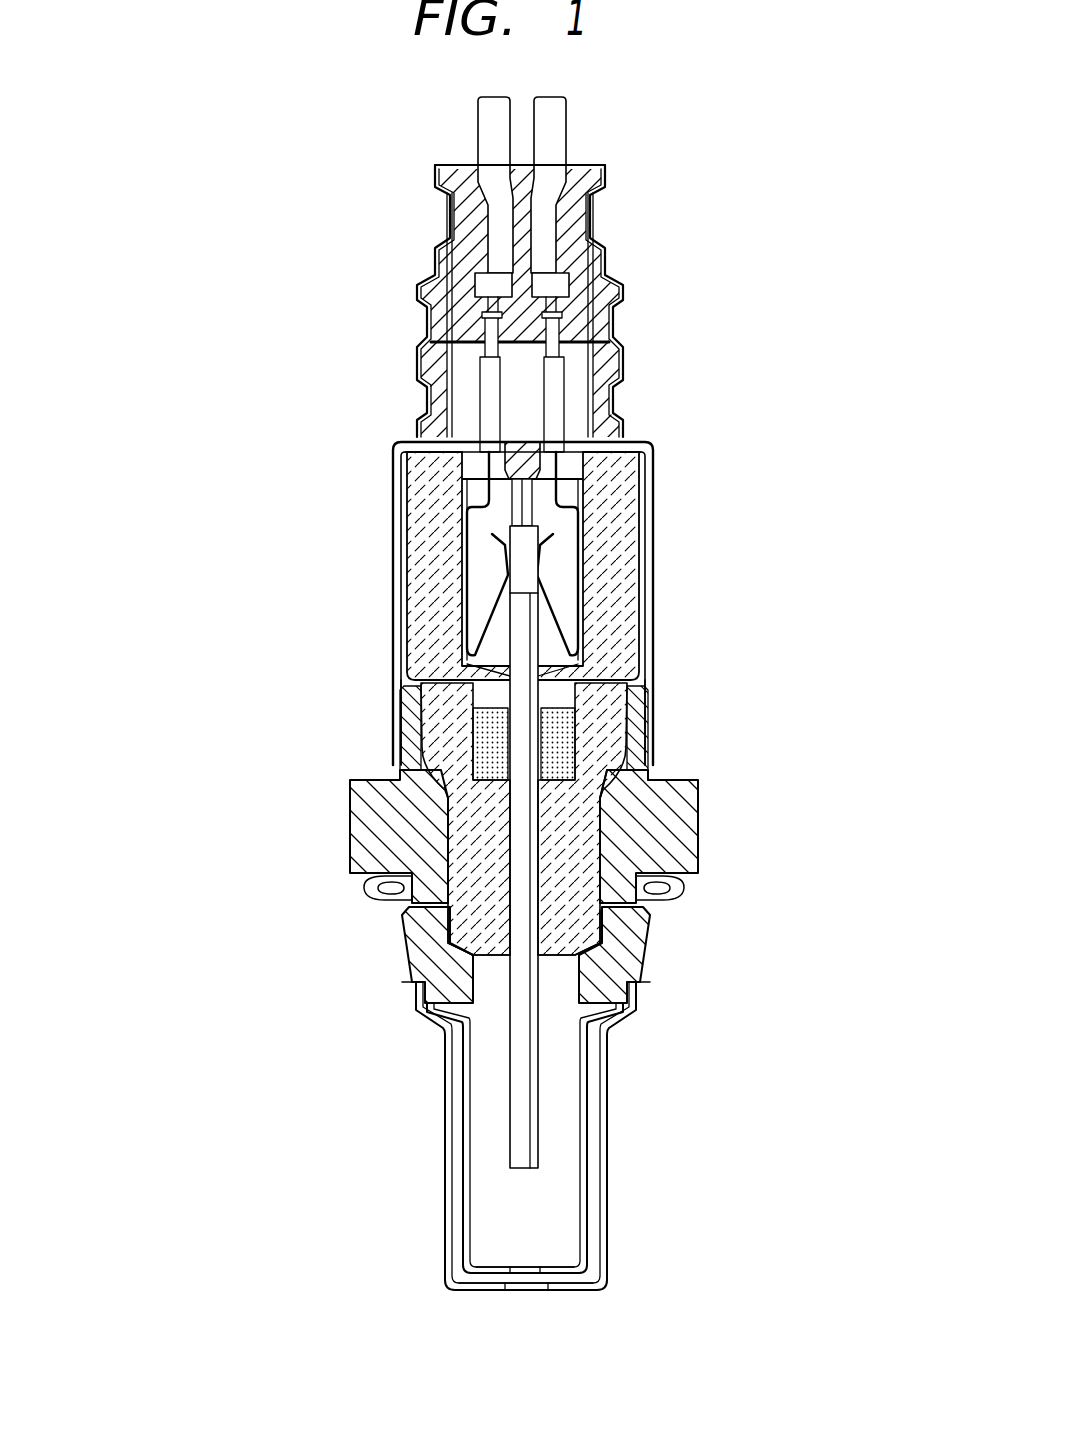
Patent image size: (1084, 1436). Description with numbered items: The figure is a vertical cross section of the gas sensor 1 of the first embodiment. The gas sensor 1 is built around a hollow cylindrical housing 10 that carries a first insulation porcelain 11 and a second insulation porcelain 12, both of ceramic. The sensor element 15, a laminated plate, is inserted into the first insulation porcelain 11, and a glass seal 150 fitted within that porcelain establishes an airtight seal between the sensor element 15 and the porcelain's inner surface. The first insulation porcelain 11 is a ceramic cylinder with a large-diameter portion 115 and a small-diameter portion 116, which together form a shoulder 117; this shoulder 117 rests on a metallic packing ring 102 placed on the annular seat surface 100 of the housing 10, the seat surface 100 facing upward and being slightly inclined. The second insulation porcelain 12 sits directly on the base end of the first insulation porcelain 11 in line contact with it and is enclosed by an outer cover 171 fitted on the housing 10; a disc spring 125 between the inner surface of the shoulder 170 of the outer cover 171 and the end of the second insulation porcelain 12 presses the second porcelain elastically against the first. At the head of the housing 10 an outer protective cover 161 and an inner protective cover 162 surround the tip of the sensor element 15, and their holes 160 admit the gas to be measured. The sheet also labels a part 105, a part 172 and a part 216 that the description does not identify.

The gas sensor 1 is at (302, 818).
The housing 10 is at (662, 813).
The first insulation porcelain 11 is at (470, 918).
The second insulation porcelain 12 is at (430, 575).
The sensor element 15 is at (527, 1133).
The annular seat surface 100 is at (437, 787).
The packing ring 102 is at (617, 793).
The housing lower wall 105 is at (393, 708).
The large-diameter portion 115 is at (603, 707).
The small-diameter portion 116 is at (560, 903).
The shoulder 117 is at (607, 770).
The disc spring 125 is at (413, 452).
The glass seal 150 is at (557, 742).
The holes 160 is at (610, 1224).
The outer protective cover 161 is at (610, 1180).
The inner protective cover 162 is at (596, 1278).
The shoulder of the outer cover 170 is at (392, 455).
The outer cover 171 is at (650, 548).
The grommet sleeve 172 is at (625, 370).
The shell bottom lip 216 is at (422, 982).